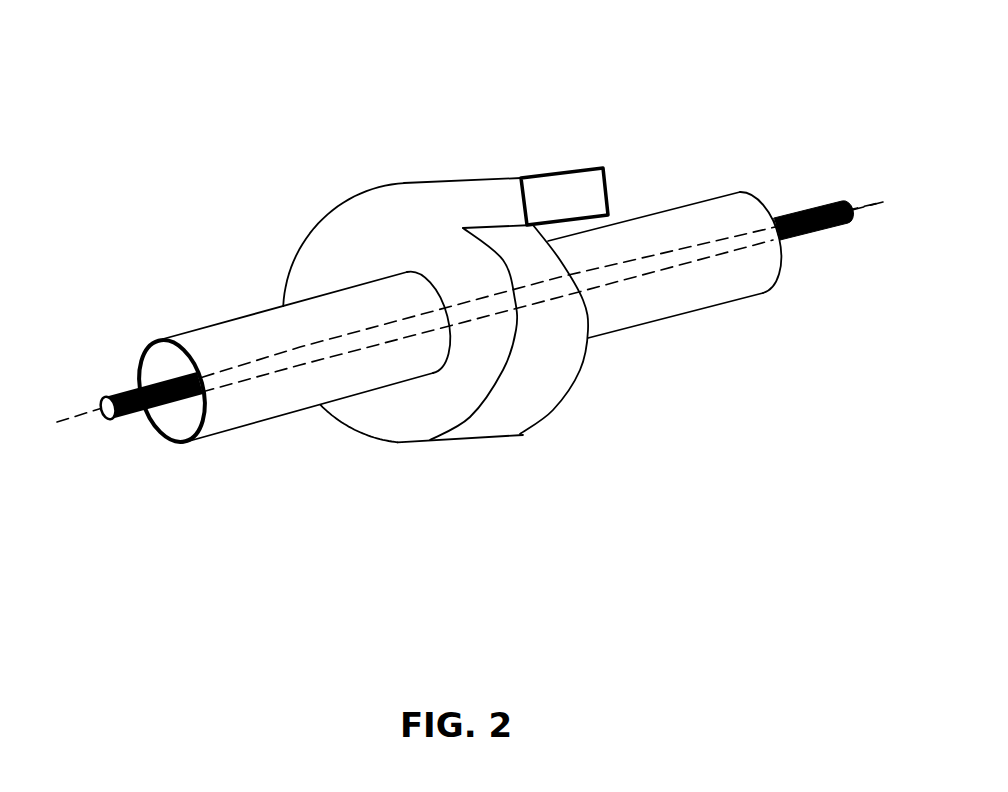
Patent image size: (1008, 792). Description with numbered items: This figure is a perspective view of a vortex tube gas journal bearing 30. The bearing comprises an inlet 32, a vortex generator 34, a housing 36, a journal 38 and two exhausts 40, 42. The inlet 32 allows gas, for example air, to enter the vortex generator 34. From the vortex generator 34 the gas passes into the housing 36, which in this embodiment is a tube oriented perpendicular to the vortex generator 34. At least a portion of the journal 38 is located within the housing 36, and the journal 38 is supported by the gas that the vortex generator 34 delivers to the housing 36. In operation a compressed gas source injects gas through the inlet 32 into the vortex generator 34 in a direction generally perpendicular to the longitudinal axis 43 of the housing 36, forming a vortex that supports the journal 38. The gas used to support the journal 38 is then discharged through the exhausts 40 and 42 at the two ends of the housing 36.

The vortex tube gas journal bearing 30 is at (237, 177).
The inlet 32 is at (563, 192).
The vortex generator 34 is at (487, 425).
The housing 36 is at (245, 395).
The journal 38 is at (128, 414).
The exhaust 40 is at (168, 366).
The exhaust 42 is at (790, 247).
The longitudinal axis 43 is at (883, 200).